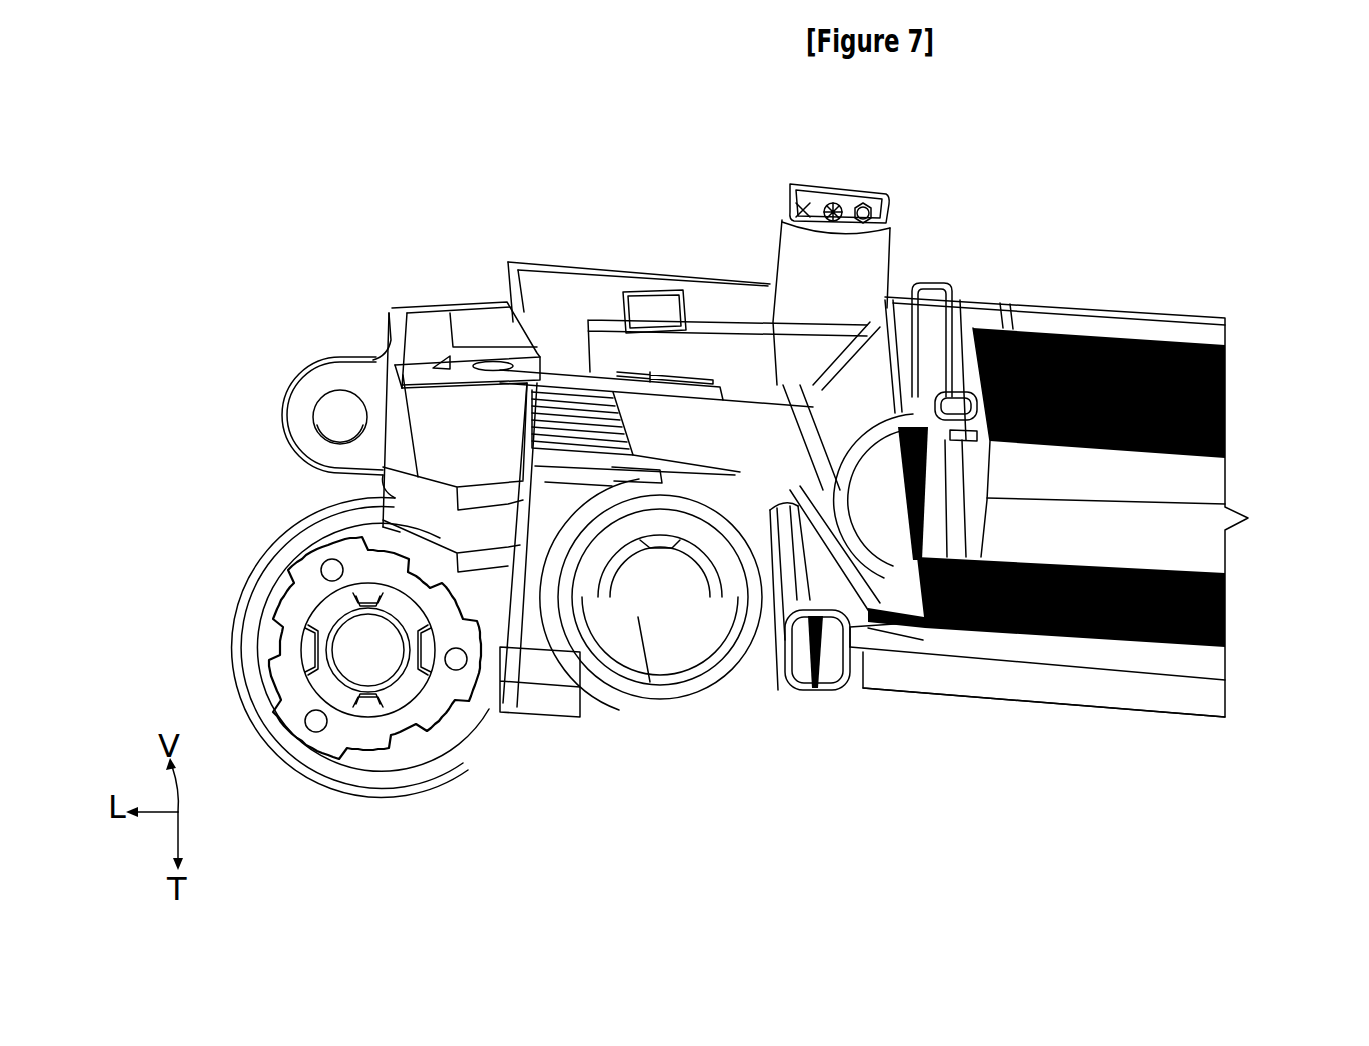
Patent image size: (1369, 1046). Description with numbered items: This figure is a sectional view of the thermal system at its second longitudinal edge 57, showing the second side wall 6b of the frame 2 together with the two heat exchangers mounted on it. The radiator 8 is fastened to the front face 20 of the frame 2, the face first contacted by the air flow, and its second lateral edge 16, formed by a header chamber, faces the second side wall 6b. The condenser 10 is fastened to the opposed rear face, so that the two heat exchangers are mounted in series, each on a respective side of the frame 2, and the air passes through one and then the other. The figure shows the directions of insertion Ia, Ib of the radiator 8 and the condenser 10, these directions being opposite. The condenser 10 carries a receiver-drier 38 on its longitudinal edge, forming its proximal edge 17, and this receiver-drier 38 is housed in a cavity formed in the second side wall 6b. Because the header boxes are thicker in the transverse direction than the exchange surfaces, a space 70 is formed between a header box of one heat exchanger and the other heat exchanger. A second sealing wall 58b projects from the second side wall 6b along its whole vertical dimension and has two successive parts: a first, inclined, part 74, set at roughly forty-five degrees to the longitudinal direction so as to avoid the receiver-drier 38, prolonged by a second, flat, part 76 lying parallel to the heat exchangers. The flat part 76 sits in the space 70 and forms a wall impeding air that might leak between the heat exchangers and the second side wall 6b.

The frame 2 is at (471, 473).
The front face 20 is at (687, 302).
The second side wall 6b is at (617, 354).
The second sealing wall 58b is at (756, 346).
The second lateral edge 16 is at (914, 401).
The radiator 8 is at (1099, 360).
The condenser 10 is at (1049, 538).
The space 70 is at (1083, 616).
The first, inclined, part 74 is at (1044, 687).
The second, flat, part 76 is at (927, 685).
The receiver-drier 38 is at (651, 614).
The proximal edge 17 is at (807, 614).
The second longitudinal edge 57 is at (350, 555).
The direction of insertion Ia is at (1098, 766).
The direction of insertion Ib is at (1098, 250).